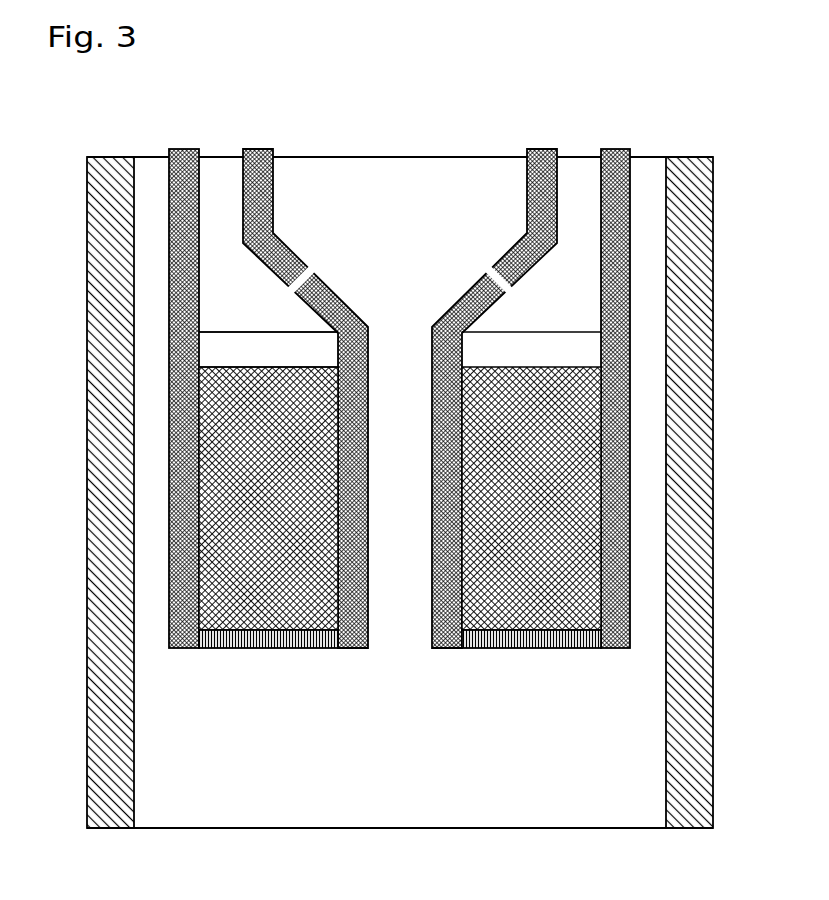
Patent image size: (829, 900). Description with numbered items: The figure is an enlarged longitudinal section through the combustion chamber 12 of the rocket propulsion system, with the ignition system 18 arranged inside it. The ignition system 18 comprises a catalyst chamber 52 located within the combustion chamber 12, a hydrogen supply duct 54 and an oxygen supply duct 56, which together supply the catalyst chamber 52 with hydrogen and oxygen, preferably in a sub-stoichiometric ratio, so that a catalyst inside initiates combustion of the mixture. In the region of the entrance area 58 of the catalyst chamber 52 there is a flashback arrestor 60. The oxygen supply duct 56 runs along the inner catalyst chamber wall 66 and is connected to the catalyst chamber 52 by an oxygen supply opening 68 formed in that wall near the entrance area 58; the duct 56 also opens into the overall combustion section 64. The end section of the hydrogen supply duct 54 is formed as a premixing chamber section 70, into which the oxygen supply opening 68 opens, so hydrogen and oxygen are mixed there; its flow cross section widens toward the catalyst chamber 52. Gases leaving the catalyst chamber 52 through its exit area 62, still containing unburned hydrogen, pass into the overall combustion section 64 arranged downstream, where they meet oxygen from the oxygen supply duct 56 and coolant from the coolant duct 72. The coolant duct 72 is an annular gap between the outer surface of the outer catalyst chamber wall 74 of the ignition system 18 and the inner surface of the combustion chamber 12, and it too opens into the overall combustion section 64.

The combustion chamber 12 is at (716, 290).
The ignition system 18 is at (633, 135).
The catalyst chamber 52 is at (318, 608).
The hydrogen supply duct 54 is at (222, 172).
The oxygen supply duct 56 is at (395, 170).
The entrance area 58 is at (242, 329).
The flashback arrestor 60 is at (258, 342).
The exit area 62 is at (268, 658).
The overall combustion section 64 is at (605, 806).
The inner catalyst chamber wall 66 is at (545, 160).
The oxygen supply opening 68 is at (312, 266).
The premixing chamber section 70 is at (223, 271).
The coolant duct 72 is at (148, 172).
The outer catalyst chamber wall 74 is at (191, 160).